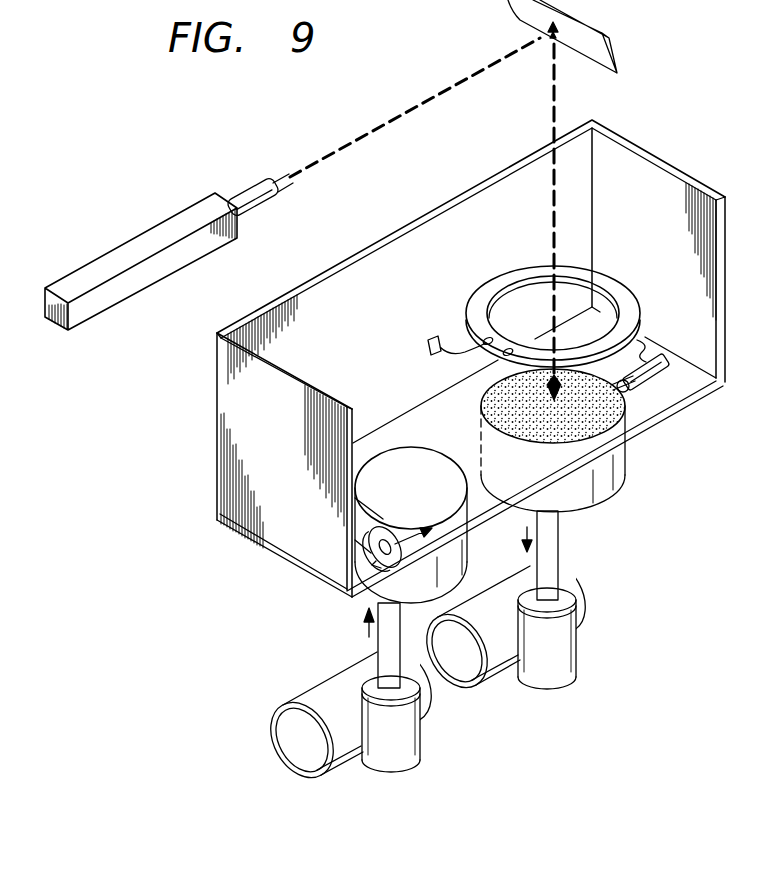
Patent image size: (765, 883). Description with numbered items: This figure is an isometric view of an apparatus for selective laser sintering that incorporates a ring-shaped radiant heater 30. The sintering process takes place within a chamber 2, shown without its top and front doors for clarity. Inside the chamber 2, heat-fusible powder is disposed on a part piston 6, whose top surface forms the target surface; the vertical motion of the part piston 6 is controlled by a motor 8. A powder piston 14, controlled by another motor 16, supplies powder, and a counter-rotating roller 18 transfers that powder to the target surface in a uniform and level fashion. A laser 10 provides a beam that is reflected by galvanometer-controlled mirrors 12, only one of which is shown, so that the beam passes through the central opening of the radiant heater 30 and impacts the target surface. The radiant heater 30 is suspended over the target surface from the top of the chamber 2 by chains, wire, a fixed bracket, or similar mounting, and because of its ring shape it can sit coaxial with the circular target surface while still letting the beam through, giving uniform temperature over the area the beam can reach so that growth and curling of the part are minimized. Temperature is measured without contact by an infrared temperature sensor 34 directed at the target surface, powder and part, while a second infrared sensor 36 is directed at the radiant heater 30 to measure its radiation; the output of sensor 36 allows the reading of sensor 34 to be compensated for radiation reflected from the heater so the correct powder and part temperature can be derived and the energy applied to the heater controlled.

The chamber 2 is at (683, 173).
The part piston 6 is at (625, 470).
The motor 8 is at (577, 648).
The laser 10 is at (126, 249).
The galvanometer-controlled mirrors 12 is at (613, 53).
The powder piston 14 is at (370, 593).
The motor 16 is at (420, 737).
The counter-rotating roller 18 is at (384, 525).
The ring-shaped radiant heater 30 is at (482, 290).
The infrared temperature sensor 34 is at (667, 378).
The second infrared sensor 36 is at (636, 340).